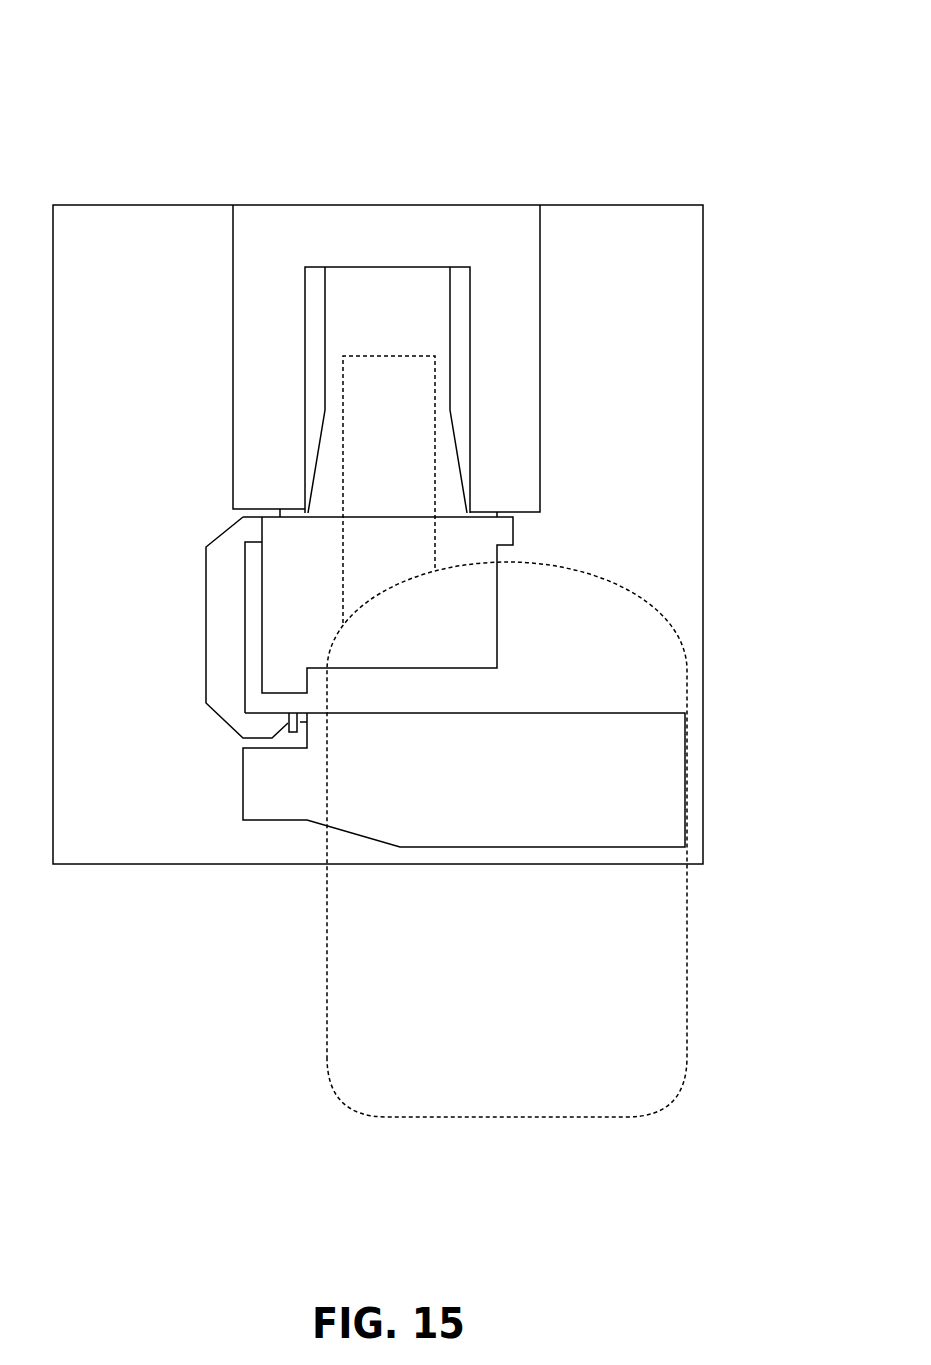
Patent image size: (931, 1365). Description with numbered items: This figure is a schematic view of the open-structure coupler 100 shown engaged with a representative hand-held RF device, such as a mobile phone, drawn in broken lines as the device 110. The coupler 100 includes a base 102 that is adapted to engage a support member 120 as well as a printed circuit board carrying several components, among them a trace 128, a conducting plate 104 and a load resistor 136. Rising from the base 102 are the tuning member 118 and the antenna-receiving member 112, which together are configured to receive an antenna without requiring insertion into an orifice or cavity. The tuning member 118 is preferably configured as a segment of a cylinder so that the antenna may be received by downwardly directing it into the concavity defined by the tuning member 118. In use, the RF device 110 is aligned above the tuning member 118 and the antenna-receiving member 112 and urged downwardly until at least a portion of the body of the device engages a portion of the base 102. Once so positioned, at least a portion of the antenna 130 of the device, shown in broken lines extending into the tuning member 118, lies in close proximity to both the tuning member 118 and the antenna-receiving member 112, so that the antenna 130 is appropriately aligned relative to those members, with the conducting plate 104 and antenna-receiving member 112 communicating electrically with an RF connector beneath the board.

The coupler 100 is at (143, 116).
The base 102 is at (675, 305).
The conducting plate 104 is at (658, 787).
The container 110 is at (649, 658).
The antenna-receiving member 112 is at (457, 637).
The tuning member 118 is at (370, 302).
The support member 120 is at (460, 232).
The trace 128 is at (225, 587).
The antenna 130 is at (378, 443).
The load resistor 136 is at (295, 733).